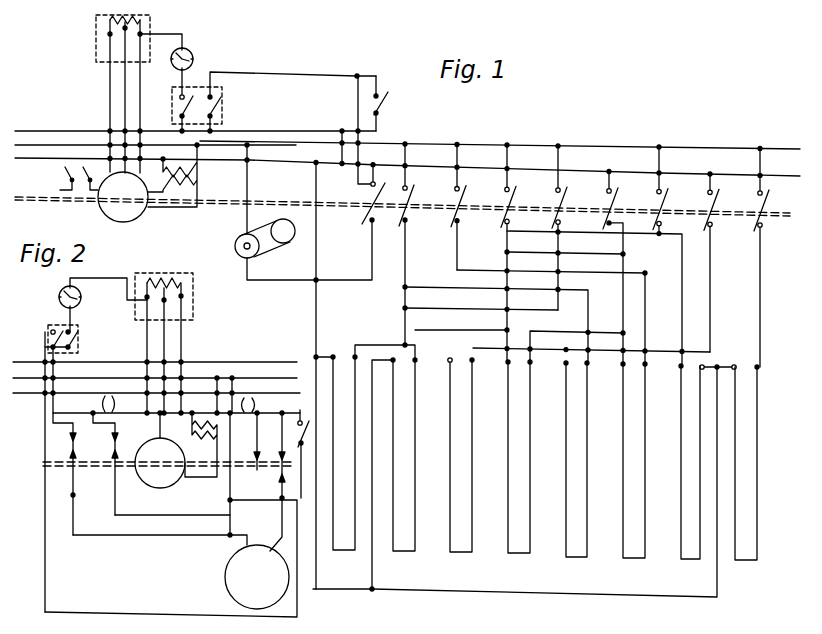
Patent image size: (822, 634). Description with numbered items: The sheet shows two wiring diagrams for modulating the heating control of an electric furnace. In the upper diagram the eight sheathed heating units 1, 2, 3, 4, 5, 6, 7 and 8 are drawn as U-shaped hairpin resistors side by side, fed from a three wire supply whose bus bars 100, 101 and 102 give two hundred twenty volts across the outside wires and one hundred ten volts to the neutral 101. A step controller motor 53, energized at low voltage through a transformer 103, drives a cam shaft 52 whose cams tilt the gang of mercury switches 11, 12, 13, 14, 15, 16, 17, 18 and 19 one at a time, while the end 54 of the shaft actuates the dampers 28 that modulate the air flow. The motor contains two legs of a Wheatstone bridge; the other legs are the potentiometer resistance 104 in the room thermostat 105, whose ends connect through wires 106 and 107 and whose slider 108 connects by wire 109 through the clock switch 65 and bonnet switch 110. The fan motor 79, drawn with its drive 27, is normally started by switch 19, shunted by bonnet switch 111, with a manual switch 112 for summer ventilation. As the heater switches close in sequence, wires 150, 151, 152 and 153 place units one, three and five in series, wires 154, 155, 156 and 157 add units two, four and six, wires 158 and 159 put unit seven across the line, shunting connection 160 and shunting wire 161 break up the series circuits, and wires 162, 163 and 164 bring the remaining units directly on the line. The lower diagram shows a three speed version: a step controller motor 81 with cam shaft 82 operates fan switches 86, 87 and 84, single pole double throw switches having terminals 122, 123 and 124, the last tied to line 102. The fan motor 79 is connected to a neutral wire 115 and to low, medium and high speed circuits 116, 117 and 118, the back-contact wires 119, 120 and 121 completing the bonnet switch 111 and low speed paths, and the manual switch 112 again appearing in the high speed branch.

In FIG. 1, the sheathed heating unit 1 is at (336, 552).
In FIG. 1, the sheathed heating unit 2 is at (396, 553).
In FIG. 1, the sheathed heating unit 3 is at (453, 554).
In FIG. 1, the sheathed heating unit 4 is at (511, 555).
In FIG. 1, the sheathed heating unit 5 is at (569, 559).
In FIG. 1, the sheathed heating unit 6 is at (626, 560).
In FIG. 1, the sheathed heating unit 7 is at (684, 561).
In FIG. 1, the sheathed heating unit 8 is at (738, 562).
In FIG. 1, the mercury switch 11 is at (397, 244).
In FIG. 1, the mercury switch 12 is at (455, 232).
In FIG. 1, the mercury switch 13 is at (512, 230).
In FIG. 1, the mercury switch 14 is at (554, 193).
In FIG. 1, the mercury switch 15 is at (606, 194).
In FIG. 1, the mercury switch 16 is at (656, 194).
In FIG. 1, the mercury switch 17 is at (706, 194).
In FIG. 1, the mercury switch 18 is at (758, 194).
In FIG. 1, the mercury switch 19 is at (364, 228).
In FIG. 1, the motor drive 27 is at (270, 258).
In FIG. 1, the dampers 28 is at (60, 192).
In FIG. 1, the cam shaft 52 is at (296, 199).
In FIG. 1, the step controller motor 53 is at (104, 212).
In FIG. 1, the end of cam shaft 54 is at (62, 201).
In FIG. 1, the clock switch 65 is at (190, 50).
In FIG. 2, the clock switch 65 is at (78, 289).
In FIG. 1, the fan motor 79 is at (248, 234).
In FIG. 2, the fan motor 79 is at (225, 580).
In FIG. 2, the step controller motor 81 is at (154, 486).
In FIG. 2, the cam shaft 82 is at (118, 447).
In FIG. 2, the fan switch 84 is at (281, 496).
In FIG. 2, the fan switch 86 is at (72, 461).
In FIG. 2, the fan switch 87 is at (108, 468).
In FIG. 1, the supply wire 100 is at (50, 130).
In FIG. 2, the supply wire 100 is at (44, 361).
In FIG. 1, the neutral wire 101 is at (87, 132).
In FIG. 2, the neutral wire 101 is at (93, 384).
In FIG. 1, the supply wire 102 is at (62, 161).
In FIG. 2, the supply wire 102 is at (93, 400).
In FIG. 1, the transformer 103 is at (197, 182).
In FIG. 2, the transformer 103 is at (209, 442).
In FIG. 1, the potentiometer resistance 104 is at (109, 22).
In FIG. 2, the potentiometer resistance 104 is at (150, 280).
In FIG. 1, the room thermostat 105 is at (96, 36).
In FIG. 2, the room thermostat 105 is at (183, 277).
In FIG. 1, the wire 106 is at (109, 70).
In FIG. 2, the wire 106 is at (148, 342).
In FIG. 1, the wire 107 is at (139, 100).
In FIG. 2, the wire 107 is at (183, 299).
In FIG. 1, the potentiometer slider 108 is at (125, 30).
In FIG. 2, the potentiometer slider 108 is at (166, 299).
In FIG. 1, the wire 109 is at (124, 86).
In FIG. 2, the wire 109 is at (127, 300).
In FIG. 1, the bonnet switch 110 is at (188, 96).
In FIG. 2, the bonnet switch 110 is at (79, 332).
In FIG. 1, the bonnet switch 111 is at (222, 116).
In FIG. 2, the bonnet switch 111 is at (80, 346).
In FIG. 1, the manual switch 112 is at (387, 105).
In FIG. 2, the manual switch 112 is at (299, 418).
In FIG. 2, the neutral wire 115 is at (229, 502).
In FIG. 1, the low speed circuit 116 is at (222, 98).
In FIG. 2, the low speed circuit 116 is at (105, 536).
In FIG. 2, the medium speed circuit 117 is at (167, 516).
In FIG. 2, the high speed circuit 118 is at (257, 553).
In FIG. 2, the wire 119 is at (45, 335).
In FIG. 2, the wire 120 is at (93, 418).
In FIG. 2, the wire 121 is at (262, 395).
In FIG. 2, the terminal 122 is at (44, 464).
In FIG. 2, the terminal 123 is at (93, 465).
In FIG. 2, the terminal 124 is at (259, 468).
In FIG. 1, the wire 150 is at (316, 332).
In FIG. 1, the wire 151 is at (382, 342).
In FIG. 1, the wire 152 is at (485, 349).
In FIG. 1, the wire 153 is at (405, 288).
In FIG. 1, the wire 154 is at (372, 591).
In FIG. 1, the wire 155 is at (470, 332).
In FIG. 1, the wire 156 is at (575, 334).
In FIG. 1, the wire 157 is at (457, 270).
In FIG. 1, the wire 158 is at (430, 594).
In FIG. 1, the wire 159 is at (507, 237).
In FIG. 1, the shunting connection 160 is at (556, 244).
In FIG. 1, the shunting wire 161 is at (620, 244).
In FIG. 1, the wire 162 is at (665, 248).
In FIG. 1, the wire 163 is at (712, 244).
In FIG. 1, the wire 164 is at (759, 293).